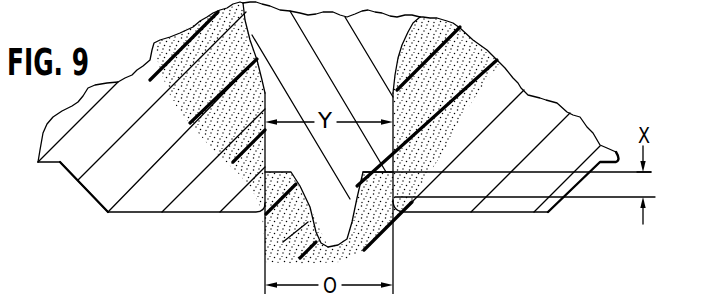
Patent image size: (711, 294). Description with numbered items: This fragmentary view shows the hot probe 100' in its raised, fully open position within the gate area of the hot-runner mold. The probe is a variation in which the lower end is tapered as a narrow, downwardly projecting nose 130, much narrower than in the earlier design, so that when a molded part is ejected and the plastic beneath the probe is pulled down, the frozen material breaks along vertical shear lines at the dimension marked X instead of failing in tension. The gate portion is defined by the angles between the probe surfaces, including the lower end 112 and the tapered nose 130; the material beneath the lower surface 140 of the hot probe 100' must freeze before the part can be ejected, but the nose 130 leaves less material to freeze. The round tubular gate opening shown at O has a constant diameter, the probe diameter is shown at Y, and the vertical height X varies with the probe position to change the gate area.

The hot probe 100' is at (390, 148).
The lower end surface of the hot probe 112 is at (151, 106).
The tapered lower end 130 is at (327, 228).
The lower surface of the hot probe 140 is at (287, 205).